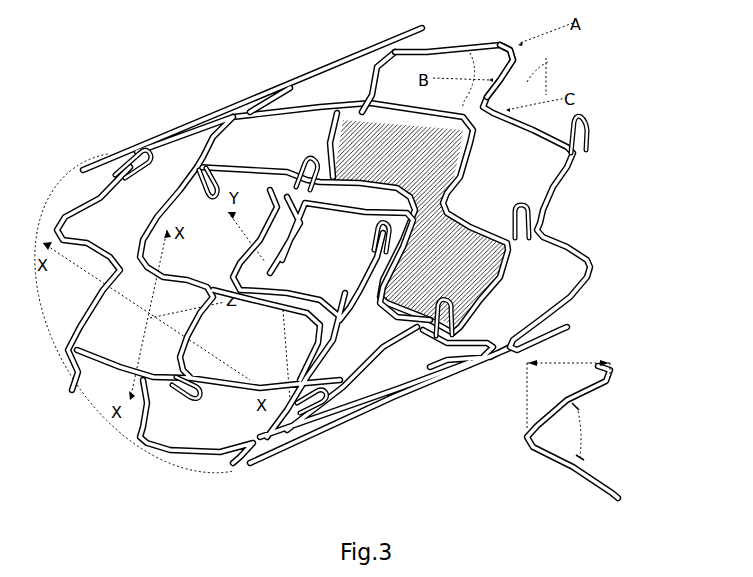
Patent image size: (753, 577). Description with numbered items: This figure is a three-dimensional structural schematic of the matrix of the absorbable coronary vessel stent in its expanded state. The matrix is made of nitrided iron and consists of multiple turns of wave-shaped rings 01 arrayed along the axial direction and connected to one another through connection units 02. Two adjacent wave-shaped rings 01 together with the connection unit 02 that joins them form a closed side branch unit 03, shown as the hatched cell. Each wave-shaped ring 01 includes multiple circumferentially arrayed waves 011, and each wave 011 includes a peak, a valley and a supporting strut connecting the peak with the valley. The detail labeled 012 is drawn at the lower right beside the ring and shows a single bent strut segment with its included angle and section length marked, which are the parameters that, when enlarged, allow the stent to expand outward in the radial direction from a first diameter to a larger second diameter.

The wave-shaped ring 01 is at (578, 236).
The wave 011 is at (527, 82).
The strut segment with bend angle 012 is at (600, 470).
The connection unit 02 is at (523, 210).
The side branch unit 03 is at (375, 143).